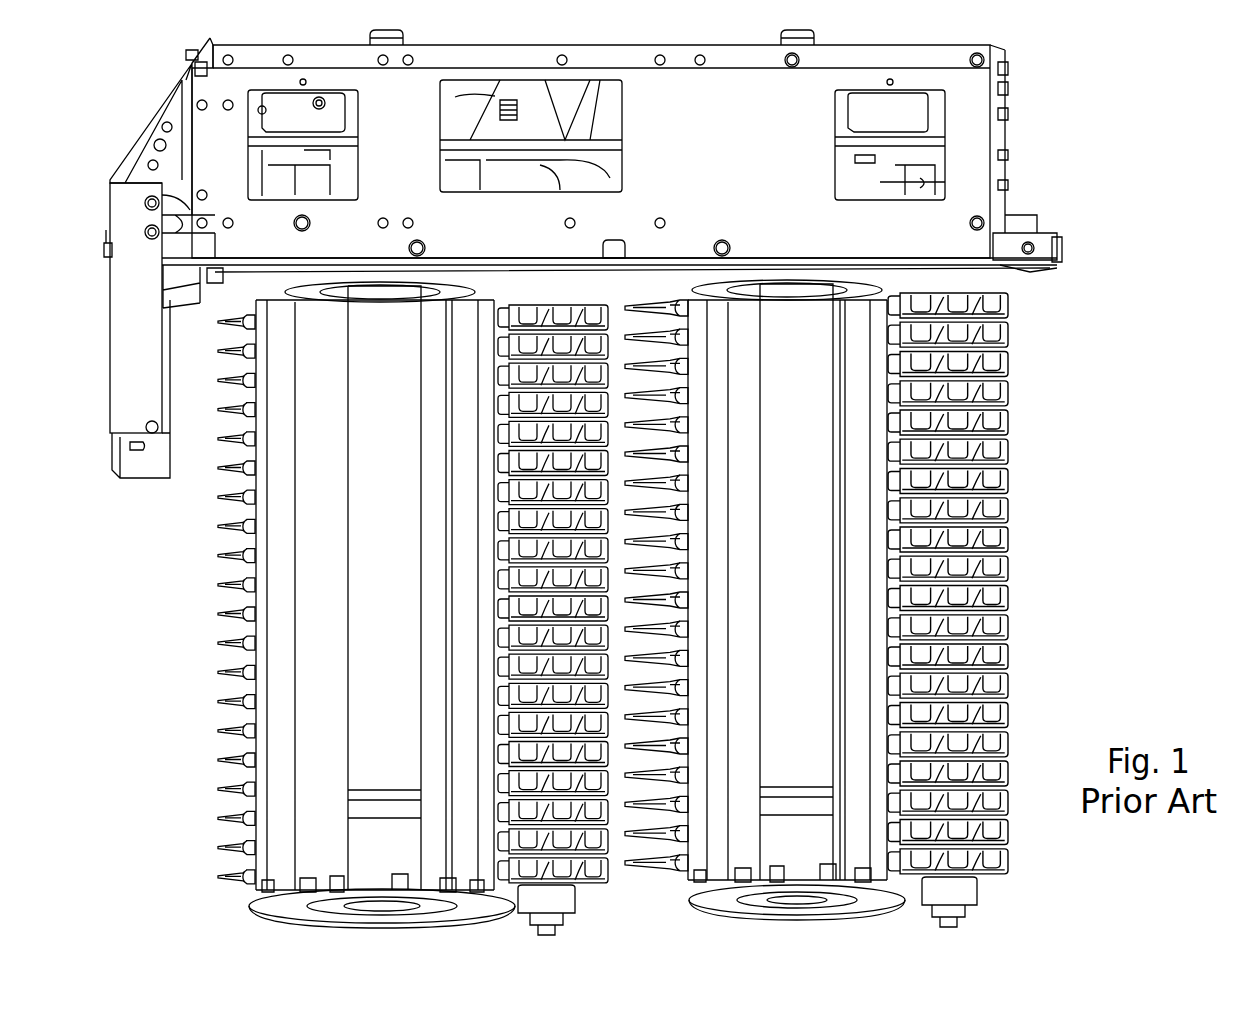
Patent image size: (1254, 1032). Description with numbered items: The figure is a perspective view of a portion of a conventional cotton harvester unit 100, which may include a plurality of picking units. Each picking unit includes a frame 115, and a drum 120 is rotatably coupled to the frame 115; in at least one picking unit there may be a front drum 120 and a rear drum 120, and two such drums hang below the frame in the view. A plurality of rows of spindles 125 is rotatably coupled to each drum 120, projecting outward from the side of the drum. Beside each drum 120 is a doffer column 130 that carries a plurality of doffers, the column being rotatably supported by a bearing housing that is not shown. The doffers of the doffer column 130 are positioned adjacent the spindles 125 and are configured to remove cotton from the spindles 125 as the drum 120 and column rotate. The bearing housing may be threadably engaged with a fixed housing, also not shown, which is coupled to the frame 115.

The cotton harvester unit 100 is at (1127, 97).
The frame 115 is at (975, 180).
The drum 120 is at (410, 598).
The spindles 125 is at (218, 645).
The doffer column 130 is at (478, 522).